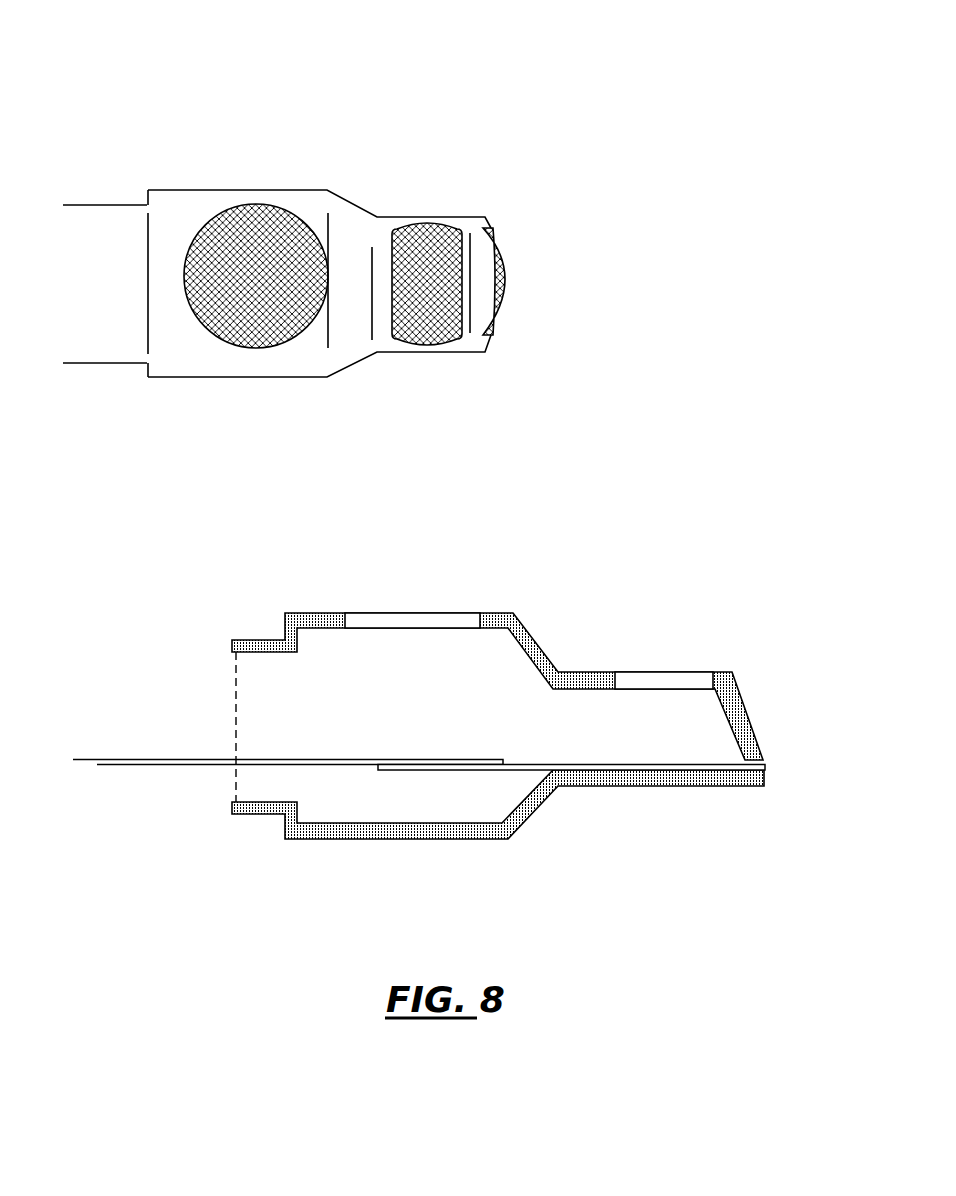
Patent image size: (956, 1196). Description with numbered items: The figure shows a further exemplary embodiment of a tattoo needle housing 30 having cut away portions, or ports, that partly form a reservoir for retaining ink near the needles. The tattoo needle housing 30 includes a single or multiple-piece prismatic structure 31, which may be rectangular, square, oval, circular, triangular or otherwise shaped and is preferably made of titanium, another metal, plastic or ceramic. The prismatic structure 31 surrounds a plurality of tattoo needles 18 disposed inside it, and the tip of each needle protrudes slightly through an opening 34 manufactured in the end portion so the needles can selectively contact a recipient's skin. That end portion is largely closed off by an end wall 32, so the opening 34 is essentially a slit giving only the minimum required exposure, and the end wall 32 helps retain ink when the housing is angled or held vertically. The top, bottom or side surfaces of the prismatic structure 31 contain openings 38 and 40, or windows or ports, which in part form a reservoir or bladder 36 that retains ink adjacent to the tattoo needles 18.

The tattoo needles 18 is at (622, 769).
The tattoo needle housing 30 is at (447, 455).
The prismatic structure 31 is at (358, 203).
The end wall 32 is at (472, 267).
The opening 34 is at (497, 288).
The reservoir 36 is at (297, 205).
The opening 38 is at (428, 297).
The opening 40 is at (247, 288).